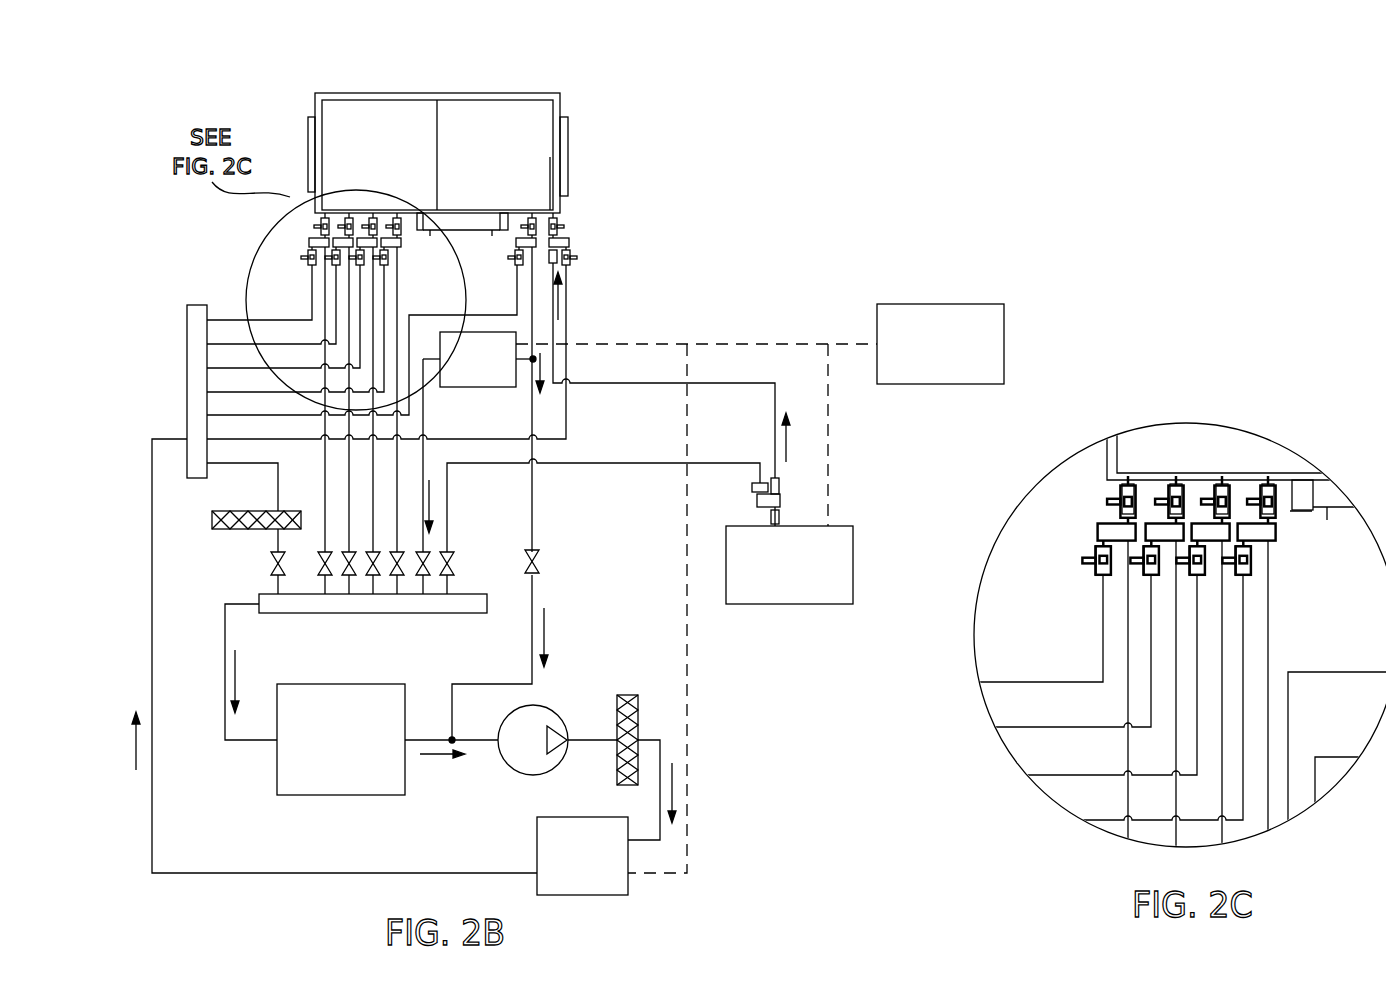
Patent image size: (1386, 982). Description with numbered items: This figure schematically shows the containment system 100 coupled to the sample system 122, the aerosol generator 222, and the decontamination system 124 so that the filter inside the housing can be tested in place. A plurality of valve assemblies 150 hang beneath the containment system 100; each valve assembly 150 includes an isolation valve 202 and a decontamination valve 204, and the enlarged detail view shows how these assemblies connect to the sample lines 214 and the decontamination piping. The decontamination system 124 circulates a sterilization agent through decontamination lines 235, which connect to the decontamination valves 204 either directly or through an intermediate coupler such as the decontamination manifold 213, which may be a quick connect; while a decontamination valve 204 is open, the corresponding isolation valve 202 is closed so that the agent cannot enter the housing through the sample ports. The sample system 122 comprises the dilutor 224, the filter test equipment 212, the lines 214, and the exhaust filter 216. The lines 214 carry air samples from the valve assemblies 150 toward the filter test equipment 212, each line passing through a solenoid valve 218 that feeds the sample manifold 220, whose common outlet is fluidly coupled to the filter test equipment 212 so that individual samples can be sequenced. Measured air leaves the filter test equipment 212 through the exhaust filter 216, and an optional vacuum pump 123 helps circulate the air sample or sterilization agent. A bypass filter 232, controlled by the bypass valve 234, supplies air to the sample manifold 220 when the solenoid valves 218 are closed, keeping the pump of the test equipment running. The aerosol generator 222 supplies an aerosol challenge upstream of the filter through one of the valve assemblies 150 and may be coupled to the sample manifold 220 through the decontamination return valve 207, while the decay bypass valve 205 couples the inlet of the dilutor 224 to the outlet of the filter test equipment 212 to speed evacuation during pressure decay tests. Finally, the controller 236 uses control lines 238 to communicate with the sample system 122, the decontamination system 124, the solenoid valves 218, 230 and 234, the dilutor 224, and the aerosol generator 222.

In FIG. 2B, the containment system 100 is at (592, 108).
In FIG. 2B, the valve assembly 150 is at (298, 236).
In FIG. 2C, the valve assembly 150 is at (1087, 519).
In FIG. 2B, the sample system 122 is at (335, 818).
In FIG. 2B, the vacuum pump 123 is at (531, 776).
In FIG. 2B, the decontamination system 124 is at (565, 895).
In FIG. 2C, the isolation valve 202 is at (1262, 506).
In FIG. 2C, the decontamination valve 204 is at (1093, 567).
In FIG. 2B, the decay bypass valve 205 is at (538, 568).
In FIG. 2B, the decontamination return valve 207 is at (452, 568).
In FIG. 2B, the filter test equipment 212 is at (297, 684).
In FIG. 2B, the decontamination manifold 213 is at (190, 305).
In FIG. 2B, the line 214 is at (405, 492).
In FIG. 2C, the line 214 is at (1173, 632).
In FIG. 2B, the exhaust filter 216 is at (628, 695).
In FIG. 2B, the solenoid valve 218 is at (330, 580).
In FIG. 2B, the sample manifold 220 is at (262, 613).
In FIG. 2B, the aerosol generator 222 is at (853, 560).
In FIG. 2B, the dilutor 224 is at (456, 387).
In FIG. 2B, the solenoid valve 230 is at (425, 580).
In FIG. 2B, the bypass filter 232 is at (212, 516).
In FIG. 2B, the bypass valve 234 is at (272, 566).
In FIG. 2B, the decontamination line 235 is at (212, 420).
In FIG. 2C, the decontamination line 235 is at (1100, 820).
In FIG. 2B, the controller 236 is at (1004, 345).
In FIG. 2B, the control line 238 is at (830, 368).